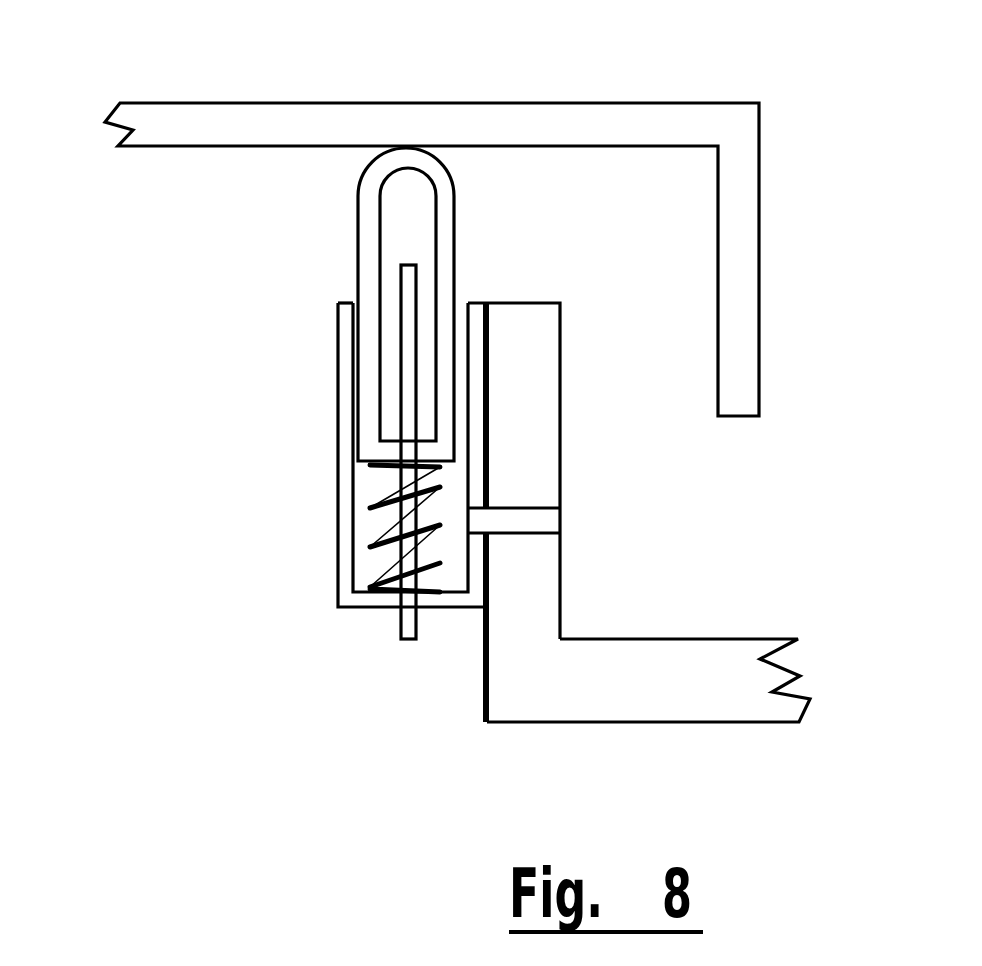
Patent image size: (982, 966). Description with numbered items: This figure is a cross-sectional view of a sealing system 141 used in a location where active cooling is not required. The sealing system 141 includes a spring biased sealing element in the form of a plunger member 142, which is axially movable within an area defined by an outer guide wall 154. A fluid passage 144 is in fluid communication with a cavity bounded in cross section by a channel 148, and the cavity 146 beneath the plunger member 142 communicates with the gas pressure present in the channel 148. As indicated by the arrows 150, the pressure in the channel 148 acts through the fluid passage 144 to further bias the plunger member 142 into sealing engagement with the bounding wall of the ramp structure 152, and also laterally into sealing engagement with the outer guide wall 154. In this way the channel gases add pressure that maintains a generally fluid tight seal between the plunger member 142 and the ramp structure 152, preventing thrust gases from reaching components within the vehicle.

The sealing system 141 is at (248, 682).
The plunger member 142 is at (358, 225).
The fluid passage 144 is at (560, 533).
The cavity 146 is at (376, 565).
The channel 148 is at (603, 689).
The arrows 150 is at (478, 257).
The ramp structure 152 is at (498, 124).
The outer guide wall 154 is at (338, 398).